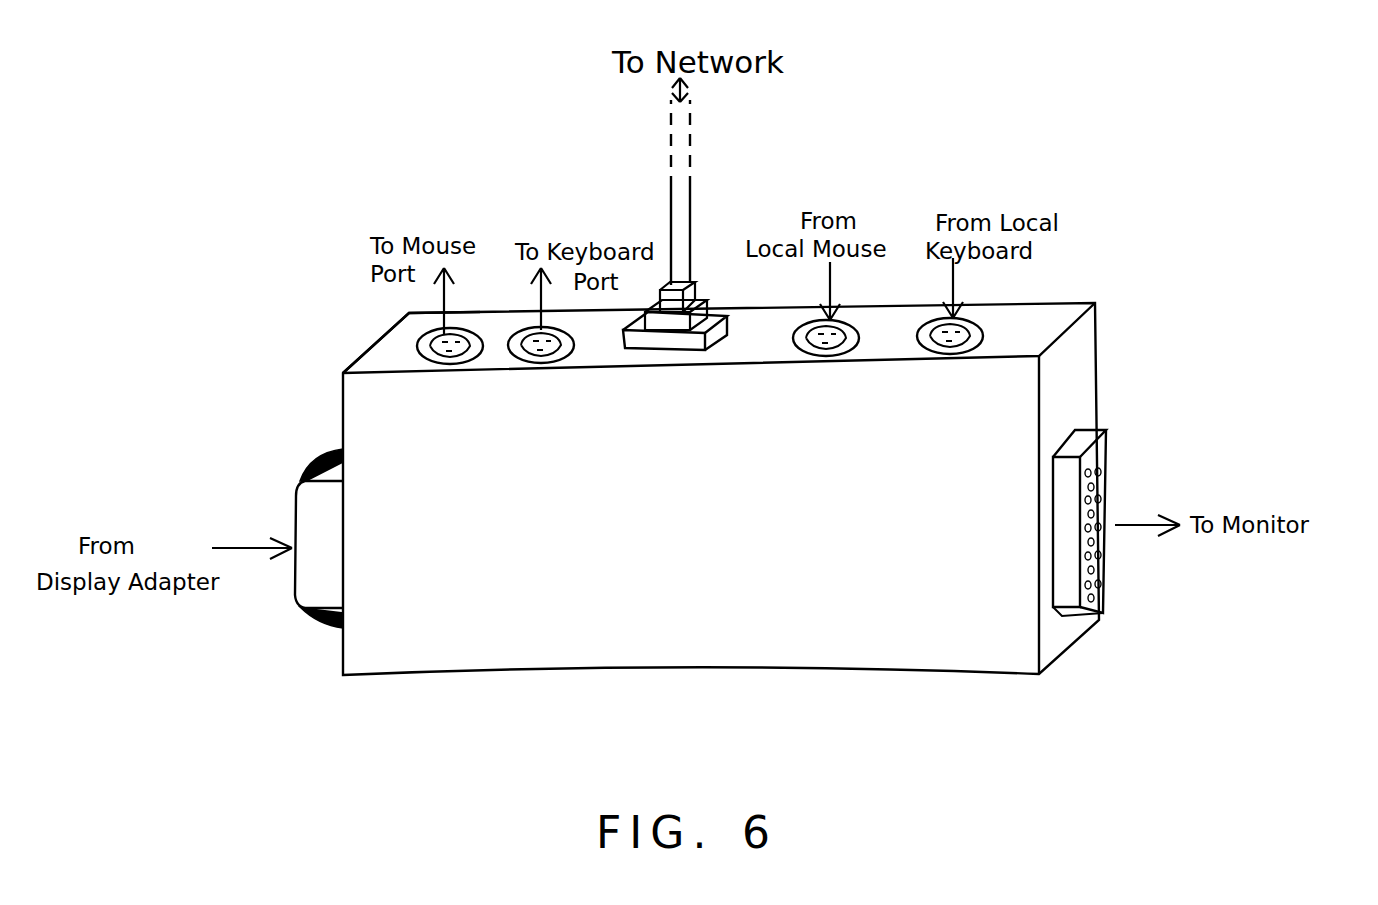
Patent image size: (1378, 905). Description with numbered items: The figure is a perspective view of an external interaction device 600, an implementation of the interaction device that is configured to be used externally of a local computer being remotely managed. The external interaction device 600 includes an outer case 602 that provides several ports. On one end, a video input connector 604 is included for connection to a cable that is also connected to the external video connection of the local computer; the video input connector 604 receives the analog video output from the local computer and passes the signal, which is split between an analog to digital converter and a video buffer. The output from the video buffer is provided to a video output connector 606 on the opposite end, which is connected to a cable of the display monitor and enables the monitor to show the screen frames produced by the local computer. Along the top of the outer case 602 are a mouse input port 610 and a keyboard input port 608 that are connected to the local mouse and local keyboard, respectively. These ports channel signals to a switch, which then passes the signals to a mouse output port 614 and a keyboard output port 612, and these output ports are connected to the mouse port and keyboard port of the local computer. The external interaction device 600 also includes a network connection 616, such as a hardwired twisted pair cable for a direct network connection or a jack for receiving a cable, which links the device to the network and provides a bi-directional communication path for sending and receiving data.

The external interaction device 600 is at (921, 670).
The outer case 602 is at (352, 396).
The video input connector 604 is at (312, 598).
The video output connector 606 is at (1100, 432).
The keyboard input port 608 is at (963, 355).
The mouse input port 610 is at (836, 357).
The keyboard output port 612 is at (554, 360).
The mouse output port 614 is at (466, 365).
The network connection 616 is at (692, 200).